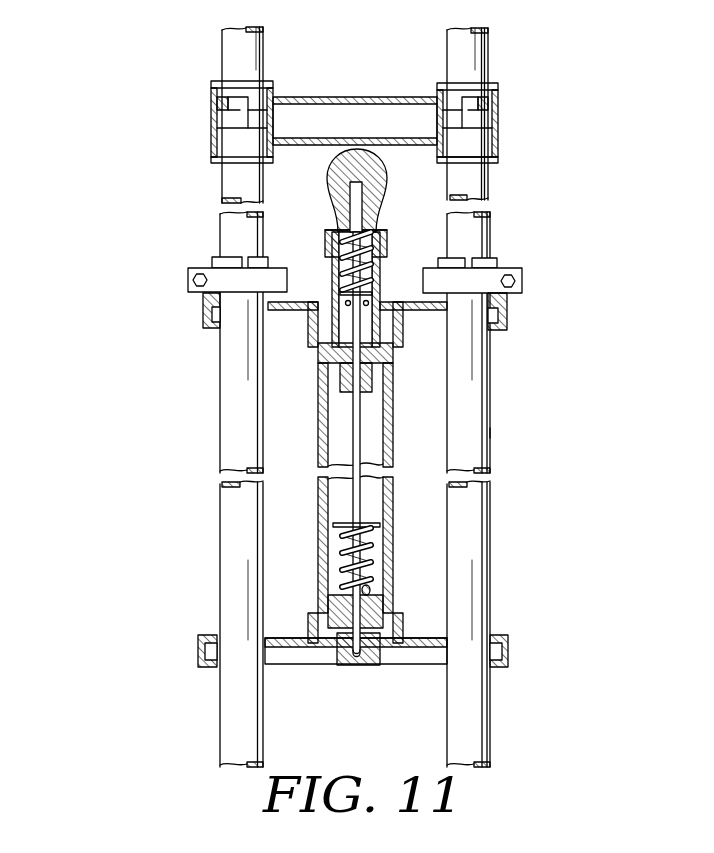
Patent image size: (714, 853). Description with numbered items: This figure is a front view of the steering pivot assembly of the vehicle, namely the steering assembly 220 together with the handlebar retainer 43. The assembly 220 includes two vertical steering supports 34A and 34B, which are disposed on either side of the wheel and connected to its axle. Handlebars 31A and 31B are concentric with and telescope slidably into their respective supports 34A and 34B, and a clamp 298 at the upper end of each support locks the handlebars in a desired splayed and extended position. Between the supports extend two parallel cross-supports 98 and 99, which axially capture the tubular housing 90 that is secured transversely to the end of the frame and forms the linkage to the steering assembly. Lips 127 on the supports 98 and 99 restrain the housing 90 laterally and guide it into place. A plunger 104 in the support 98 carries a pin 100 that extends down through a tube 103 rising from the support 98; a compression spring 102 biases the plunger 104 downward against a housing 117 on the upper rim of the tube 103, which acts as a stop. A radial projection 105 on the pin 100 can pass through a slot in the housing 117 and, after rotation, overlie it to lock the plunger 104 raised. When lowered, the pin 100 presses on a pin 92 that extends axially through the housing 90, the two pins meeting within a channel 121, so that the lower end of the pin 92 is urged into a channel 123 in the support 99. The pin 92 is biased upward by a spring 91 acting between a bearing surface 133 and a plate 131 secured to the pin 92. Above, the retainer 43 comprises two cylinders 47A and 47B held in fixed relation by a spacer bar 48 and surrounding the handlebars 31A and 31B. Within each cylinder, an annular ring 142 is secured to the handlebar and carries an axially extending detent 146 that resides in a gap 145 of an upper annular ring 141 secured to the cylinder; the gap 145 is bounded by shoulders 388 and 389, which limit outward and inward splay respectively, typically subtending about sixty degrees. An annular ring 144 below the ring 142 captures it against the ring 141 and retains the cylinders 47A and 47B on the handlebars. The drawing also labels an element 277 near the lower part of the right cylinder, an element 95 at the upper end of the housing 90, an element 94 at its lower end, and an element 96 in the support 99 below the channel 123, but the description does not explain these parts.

The handlebar 31A is at (228, 34).
The handlebar 31B is at (487, 46).
The steering support 34A is at (199, 489).
The steering support 34B is at (487, 553).
The handlebar retainer 43 is at (307, 66).
The cylinder 47A is at (214, 116).
The cylinder 47B is at (497, 104).
The spacer bar 48 is at (373, 82).
The upper annular ring 141 is at (224, 92).
The annular ring 142 is at (240, 130).
The annular ring 144 is at (232, 146).
The gap 145 is at (226, 110).
The detent 146 is at (240, 124).
The clamp bottom flange 277 is at (494, 160).
The shoulder 388 is at (273, 107).
The shoulder 389 is at (220, 102).
The tubular housing 90 is at (319, 394).
The spring 91 is at (342, 555).
The pin 92 is at (352, 501).
The lower piston block 94 is at (320, 612).
The upper block 95 is at (320, 347).
The bottom block 96 is at (372, 666).
The cross-support 98 is at (400, 306).
The cross-support 99 is at (432, 650).
The pin 100 is at (354, 193).
The compression spring 102 is at (336, 266).
The tube 103 is at (343, 288).
The plunger 104 is at (383, 180).
The projection 105 is at (330, 230).
The housing 117 is at (387, 245).
The channel 121 is at (376, 364).
The channel 123 is at (356, 662).
The lip 127 is at (403, 337).
The plate 131 is at (381, 524).
The bearing surface 133 is at (374, 596).
The steering assembly 220 is at (490, 432).
The clamp 298 is at (188, 272).